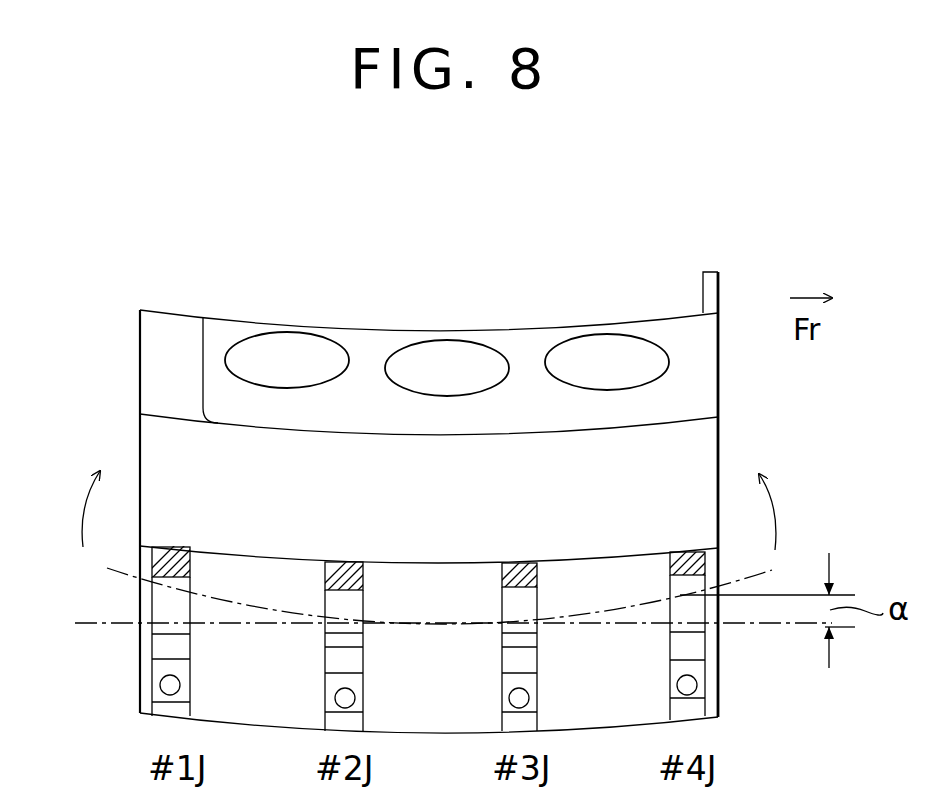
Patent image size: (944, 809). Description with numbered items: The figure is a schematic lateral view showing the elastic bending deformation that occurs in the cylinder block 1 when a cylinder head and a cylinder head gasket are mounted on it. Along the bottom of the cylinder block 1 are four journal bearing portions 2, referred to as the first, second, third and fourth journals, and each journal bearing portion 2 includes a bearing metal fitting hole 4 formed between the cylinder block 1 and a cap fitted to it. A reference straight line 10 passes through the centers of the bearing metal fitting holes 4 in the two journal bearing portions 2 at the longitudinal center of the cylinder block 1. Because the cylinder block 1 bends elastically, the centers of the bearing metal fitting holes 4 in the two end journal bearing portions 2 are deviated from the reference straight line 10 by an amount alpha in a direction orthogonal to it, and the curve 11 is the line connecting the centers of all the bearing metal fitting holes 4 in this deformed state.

The cylinder block 1 is at (718, 432).
The journal bearing portion 2 is at (190, 682).
The bearing metal fitting hole 4 is at (362, 600).
The reference straight line 10 is at (90, 623).
The curve 11 is at (118, 573).